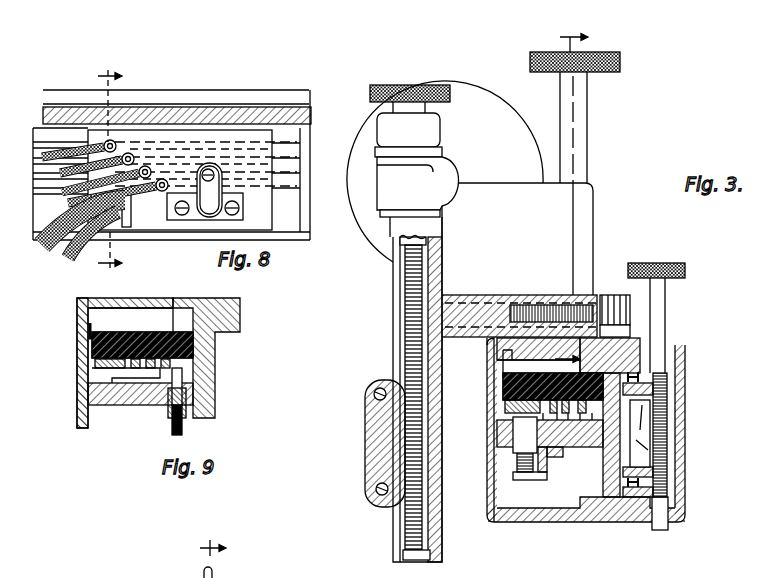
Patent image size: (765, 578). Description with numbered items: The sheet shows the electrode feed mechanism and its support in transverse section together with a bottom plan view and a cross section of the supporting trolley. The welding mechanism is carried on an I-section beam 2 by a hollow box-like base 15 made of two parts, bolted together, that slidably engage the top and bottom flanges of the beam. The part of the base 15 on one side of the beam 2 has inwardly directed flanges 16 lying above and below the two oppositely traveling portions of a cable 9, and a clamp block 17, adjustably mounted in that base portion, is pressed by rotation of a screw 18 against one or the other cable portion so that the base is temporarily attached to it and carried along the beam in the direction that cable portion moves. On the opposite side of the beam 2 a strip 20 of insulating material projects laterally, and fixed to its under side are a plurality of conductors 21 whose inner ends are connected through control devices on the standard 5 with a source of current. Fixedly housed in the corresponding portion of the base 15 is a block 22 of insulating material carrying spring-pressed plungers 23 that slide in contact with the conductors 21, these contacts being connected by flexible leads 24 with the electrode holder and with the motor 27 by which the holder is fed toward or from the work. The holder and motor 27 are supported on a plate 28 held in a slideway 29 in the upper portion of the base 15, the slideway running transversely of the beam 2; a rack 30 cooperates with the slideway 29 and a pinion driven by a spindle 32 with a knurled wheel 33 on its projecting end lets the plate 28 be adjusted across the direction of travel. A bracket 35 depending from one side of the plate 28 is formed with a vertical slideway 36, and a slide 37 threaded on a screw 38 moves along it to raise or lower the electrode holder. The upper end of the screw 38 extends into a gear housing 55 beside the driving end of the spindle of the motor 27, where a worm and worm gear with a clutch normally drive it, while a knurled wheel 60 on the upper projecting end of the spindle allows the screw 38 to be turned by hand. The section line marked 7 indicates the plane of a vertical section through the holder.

In FIG. 8, the beam 2 is at (217, 127).
In FIG. 9, the beam 2 is at (212, 363).
In FIG. 3, the beam 2 is at (605, 470).
In FIG. 3, the standard 5 is at (572, 198).
In FIG. 9, the section line 7 is at (221, 559).
In FIG. 8, the cable 9 is at (116, 172).
In FIG. 3, the cable 9 is at (640, 433).
In FIG. 9, the base 15 is at (77, 352).
In FIG. 3, the base 15 is at (488, 476).
In FIG. 3, the inwardly directed flanges 16 is at (633, 377).
In FIG. 3, the clamp block 17 is at (648, 458).
In FIG. 3, the screw 18 is at (660, 329).
In FIG. 8, the strip of insulating material 20 is at (183, 135).
In FIG. 9, the strip of insulating material 20 is at (140, 328).
In FIG. 3, the strip of insulating material 20 is at (497, 360).
In FIG. 8, the conductors 21 is at (290, 206).
In FIG. 9, the conductors 21 is at (140, 373).
In FIG. 3, the conductors 21 is at (503, 406).
In FIG. 8, the block of insulating material 22 is at (196, 195).
In FIG. 9, the block of insulating material 22 is at (143, 407).
In FIG. 3, the block of insulating material 22 is at (497, 448).
In FIG. 3, the spring-pressed plungers 23 is at (525, 434).
In FIG. 8, the flexible leads 24 is at (70, 148).
In FIG. 9, the flexible leads 24 is at (170, 430).
In FIG. 3, the motor 27 is at (458, 83).
In FIG. 3, the plate 28 is at (538, 290).
In FIG. 3, the slideway 29 is at (622, 330).
In FIG. 3, the rack 30 is at (629, 310).
In FIG. 3, the spindle 32 is at (586, 152).
In FIG. 3, the knurled wheel 33 is at (621, 62).
In FIG. 3, the bracket 35 is at (440, 532).
In FIG. 3, the vertical slideway 36 is at (393, 335).
In FIG. 3, the slide 37 is at (372, 447).
In FIG. 3, the screw 38 is at (410, 304).
In FIG. 3, the gear housing 55 is at (417, 175).
In FIG. 3, the knurled wheel 60 is at (378, 85).